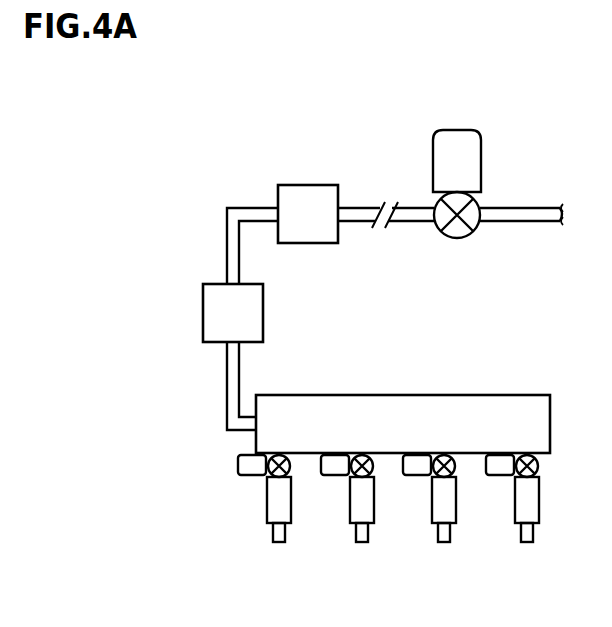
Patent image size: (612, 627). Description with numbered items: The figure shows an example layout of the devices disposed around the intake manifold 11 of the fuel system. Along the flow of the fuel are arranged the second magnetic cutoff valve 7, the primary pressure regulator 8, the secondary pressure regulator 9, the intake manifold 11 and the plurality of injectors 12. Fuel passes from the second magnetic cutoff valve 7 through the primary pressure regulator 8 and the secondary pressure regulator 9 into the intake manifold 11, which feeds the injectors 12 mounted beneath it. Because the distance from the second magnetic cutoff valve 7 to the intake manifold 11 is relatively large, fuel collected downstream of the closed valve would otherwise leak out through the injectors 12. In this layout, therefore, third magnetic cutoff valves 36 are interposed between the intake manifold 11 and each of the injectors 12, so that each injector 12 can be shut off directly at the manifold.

The second magnetic cutoff valve 7 is at (450, 130).
The primary pressure regulator 8 is at (304, 185).
The secondary pressure regulator 9 is at (263, 318).
The intake manifold 11 is at (550, 418).
The injectors 12 is at (285, 505).
The third magnetic cutoff valves 36 is at (442, 455).